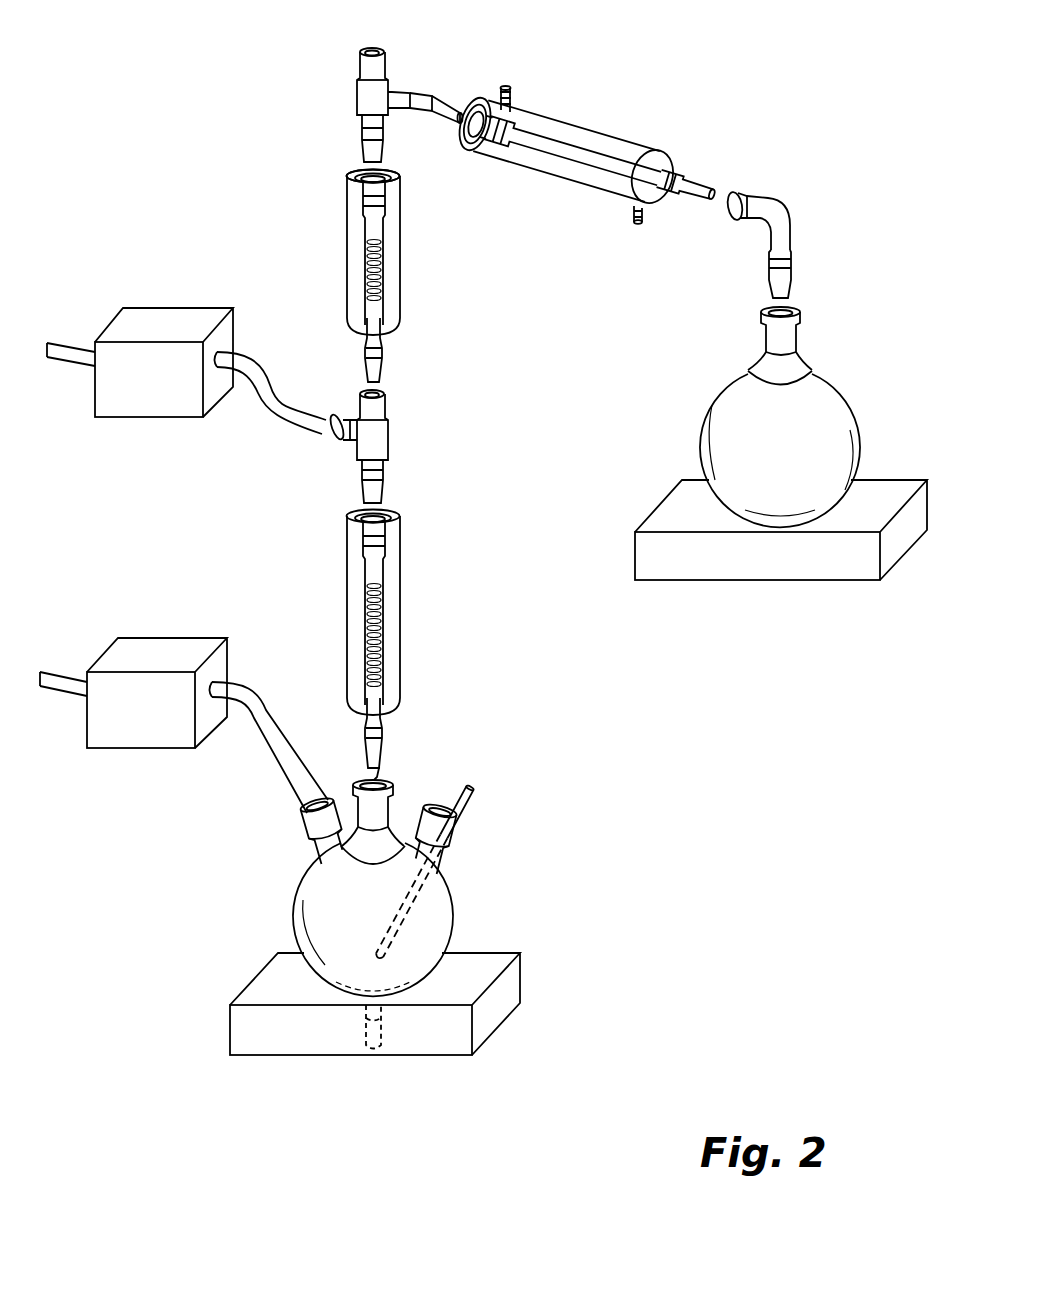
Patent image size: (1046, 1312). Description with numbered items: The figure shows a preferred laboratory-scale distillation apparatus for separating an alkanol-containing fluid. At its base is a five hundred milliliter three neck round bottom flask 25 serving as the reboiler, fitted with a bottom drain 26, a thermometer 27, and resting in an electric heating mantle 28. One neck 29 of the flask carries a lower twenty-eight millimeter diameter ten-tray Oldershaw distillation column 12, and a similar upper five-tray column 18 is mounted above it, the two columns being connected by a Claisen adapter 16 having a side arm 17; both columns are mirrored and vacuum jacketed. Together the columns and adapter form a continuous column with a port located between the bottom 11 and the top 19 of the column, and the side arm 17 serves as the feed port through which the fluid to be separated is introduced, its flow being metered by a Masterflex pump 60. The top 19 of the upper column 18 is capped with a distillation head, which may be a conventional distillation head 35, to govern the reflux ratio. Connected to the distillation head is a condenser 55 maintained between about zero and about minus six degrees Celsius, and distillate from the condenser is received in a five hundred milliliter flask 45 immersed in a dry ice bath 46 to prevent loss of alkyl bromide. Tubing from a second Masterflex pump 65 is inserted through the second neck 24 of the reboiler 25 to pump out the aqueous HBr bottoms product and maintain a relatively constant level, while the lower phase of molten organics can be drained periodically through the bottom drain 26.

The bottom of the column 11 is at (380, 778).
The lower Oldershaw distillation column 12 is at (406, 626).
The Claisen adapter 16 is at (394, 430).
The side arm 17 is at (347, 440).
The upper Oldershaw column 18 is at (406, 258).
The top of the upper column 19 is at (396, 176).
The second neck 24 is at (318, 842).
The three neck round bottom flask 25 is at (292, 912).
The bottom drain 26 is at (385, 1030).
The thermometer 27 is at (464, 815).
The electric heating mantle 28 is at (524, 970).
The neck 29 is at (432, 826).
The conventional distillation head 35 is at (358, 97).
The flask 45 is at (712, 398).
The dry ice bath 46 is at (632, 556).
The condenser 55 is at (586, 122).
The Masterflex pump 60 is at (160, 306).
The second Masterflex pump 65 is at (160, 630).